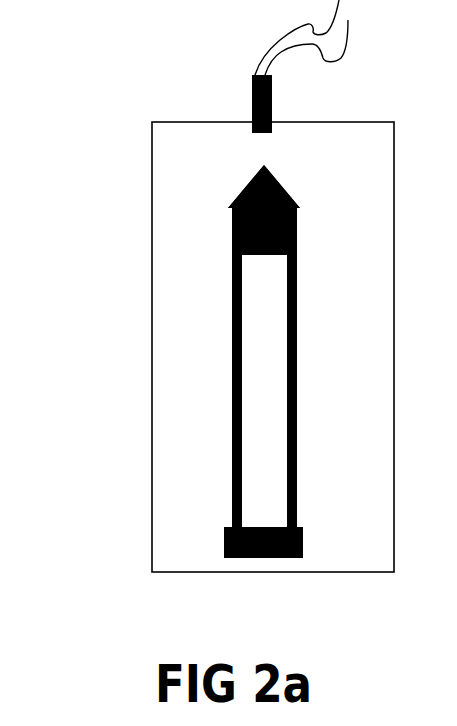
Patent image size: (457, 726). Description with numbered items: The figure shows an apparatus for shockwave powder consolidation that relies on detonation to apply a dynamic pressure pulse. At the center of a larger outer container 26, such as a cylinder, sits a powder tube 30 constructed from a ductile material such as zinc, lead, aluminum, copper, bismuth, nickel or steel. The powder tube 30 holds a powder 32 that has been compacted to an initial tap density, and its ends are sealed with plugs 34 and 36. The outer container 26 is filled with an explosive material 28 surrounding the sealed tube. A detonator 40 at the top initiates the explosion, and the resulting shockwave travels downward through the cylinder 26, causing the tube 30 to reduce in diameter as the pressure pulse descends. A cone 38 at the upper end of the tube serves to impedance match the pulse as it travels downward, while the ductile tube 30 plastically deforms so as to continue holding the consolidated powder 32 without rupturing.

The outer container 26 is at (147, 465).
The explosive material 28 is at (182, 202).
The powder tube 30 is at (297, 290).
The powder 32 is at (262, 437).
The plug 34 is at (227, 558).
The plug 36 is at (232, 242).
The cone 38 is at (283, 185).
The detonator 40 is at (250, 82).